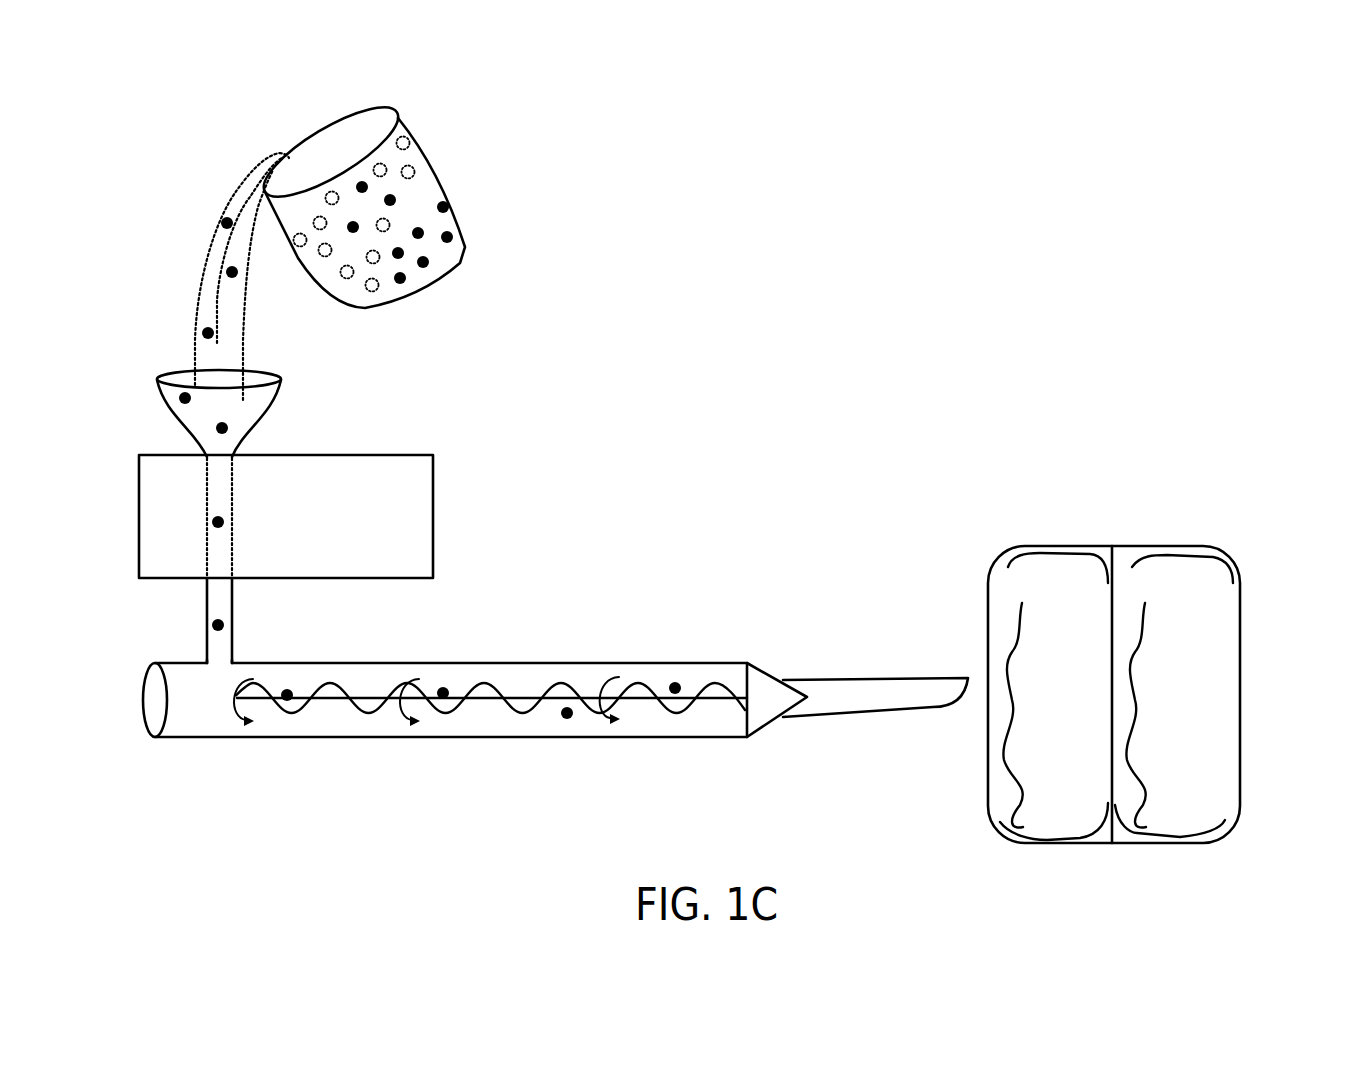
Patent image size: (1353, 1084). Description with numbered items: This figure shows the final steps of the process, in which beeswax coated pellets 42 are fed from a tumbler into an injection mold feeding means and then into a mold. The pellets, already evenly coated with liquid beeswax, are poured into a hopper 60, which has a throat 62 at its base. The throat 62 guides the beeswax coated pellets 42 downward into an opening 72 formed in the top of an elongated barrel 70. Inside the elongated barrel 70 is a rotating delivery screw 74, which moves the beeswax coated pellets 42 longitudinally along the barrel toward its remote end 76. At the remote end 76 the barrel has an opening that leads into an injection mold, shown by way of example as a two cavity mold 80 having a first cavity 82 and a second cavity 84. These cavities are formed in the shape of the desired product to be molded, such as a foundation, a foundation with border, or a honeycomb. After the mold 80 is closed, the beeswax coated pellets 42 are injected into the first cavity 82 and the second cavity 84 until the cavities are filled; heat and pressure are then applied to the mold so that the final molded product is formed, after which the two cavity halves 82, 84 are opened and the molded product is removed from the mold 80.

The beeswax coated pellets 42 is at (203, 333).
The hopper 60 is at (280, 387).
The throat 62 is at (232, 622).
The elongated barrel 70 is at (195, 720).
The opening 72 is at (215, 662).
The rotating delivery screw 74 is at (448, 713).
The remote end 76 is at (933, 680).
The two cavity mold 80 is at (1146, 531).
The first cavity 82 is at (1055, 572).
The second cavity 84 is at (1202, 633).